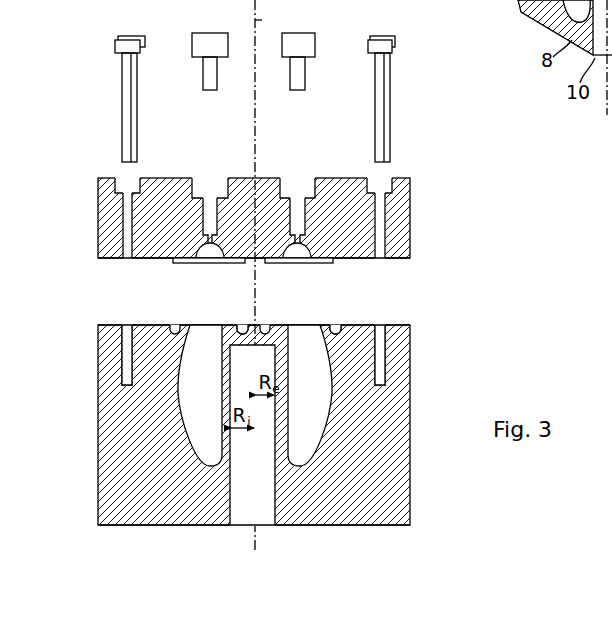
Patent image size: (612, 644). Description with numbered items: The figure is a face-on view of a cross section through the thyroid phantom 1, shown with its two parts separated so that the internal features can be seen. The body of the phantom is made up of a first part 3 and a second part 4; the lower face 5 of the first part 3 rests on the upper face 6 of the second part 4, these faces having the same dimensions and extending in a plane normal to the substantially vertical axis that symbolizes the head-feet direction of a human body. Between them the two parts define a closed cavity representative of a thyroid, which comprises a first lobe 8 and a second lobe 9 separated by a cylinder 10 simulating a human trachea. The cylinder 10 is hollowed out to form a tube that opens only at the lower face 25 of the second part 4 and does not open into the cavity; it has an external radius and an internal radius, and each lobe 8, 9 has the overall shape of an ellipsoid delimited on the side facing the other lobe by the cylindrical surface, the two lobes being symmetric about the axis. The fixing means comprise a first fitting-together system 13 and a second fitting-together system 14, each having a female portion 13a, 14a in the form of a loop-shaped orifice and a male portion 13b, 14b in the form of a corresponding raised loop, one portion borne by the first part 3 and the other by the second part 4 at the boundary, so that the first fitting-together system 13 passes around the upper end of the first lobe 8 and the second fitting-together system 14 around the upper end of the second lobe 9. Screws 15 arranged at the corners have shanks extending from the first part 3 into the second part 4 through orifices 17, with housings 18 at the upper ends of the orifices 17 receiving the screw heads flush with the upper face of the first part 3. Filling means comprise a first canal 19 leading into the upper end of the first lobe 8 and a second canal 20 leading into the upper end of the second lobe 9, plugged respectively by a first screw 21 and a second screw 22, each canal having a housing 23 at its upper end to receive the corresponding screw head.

The thyroid phantom 1 is at (452, 311).
The first part 3 is at (410, 243).
The second part 4 is at (410, 433).
The lower face 5 is at (100, 260).
The upper face 6 is at (110, 324).
The first lobe 8 is at (194, 404).
The second lobe 9 is at (300, 404).
The cylinder 10 is at (242, 527).
The first fitting-together system 13 is at (184, 296).
The female portion 13a is at (243, 323).
The male portion 13b is at (177, 265).
The second fitting-together system 14 is at (338, 296).
The female portion 14a is at (336, 323).
The male portion 14b is at (268, 264).
The screws 15 is at (118, 44).
The orifices 17 is at (125, 214).
The housings 18 is at (115, 173).
The first canal 19 is at (208, 197).
The second canal 20 is at (298, 197).
The first screw 21 is at (194, 40).
The second screw 22 is at (313, 40).
The housing 23 is at (192, 173).
The lower face 25 is at (391, 527).